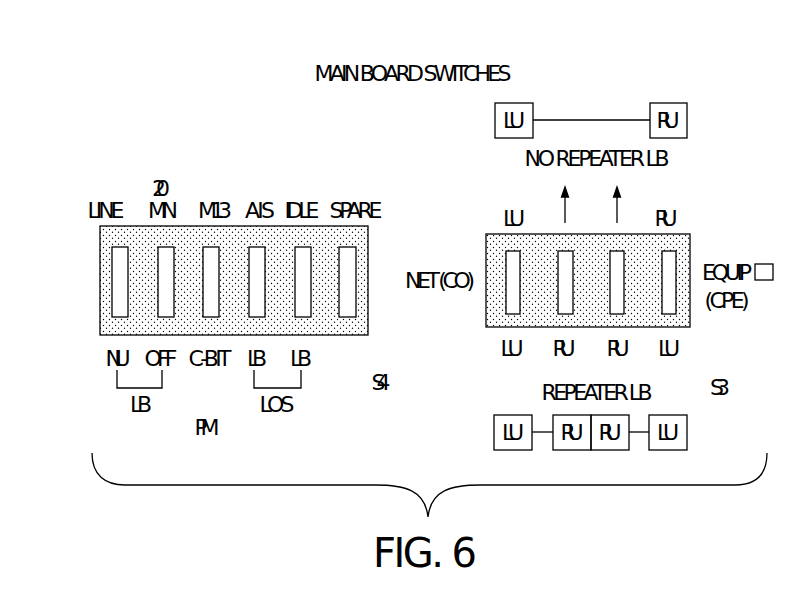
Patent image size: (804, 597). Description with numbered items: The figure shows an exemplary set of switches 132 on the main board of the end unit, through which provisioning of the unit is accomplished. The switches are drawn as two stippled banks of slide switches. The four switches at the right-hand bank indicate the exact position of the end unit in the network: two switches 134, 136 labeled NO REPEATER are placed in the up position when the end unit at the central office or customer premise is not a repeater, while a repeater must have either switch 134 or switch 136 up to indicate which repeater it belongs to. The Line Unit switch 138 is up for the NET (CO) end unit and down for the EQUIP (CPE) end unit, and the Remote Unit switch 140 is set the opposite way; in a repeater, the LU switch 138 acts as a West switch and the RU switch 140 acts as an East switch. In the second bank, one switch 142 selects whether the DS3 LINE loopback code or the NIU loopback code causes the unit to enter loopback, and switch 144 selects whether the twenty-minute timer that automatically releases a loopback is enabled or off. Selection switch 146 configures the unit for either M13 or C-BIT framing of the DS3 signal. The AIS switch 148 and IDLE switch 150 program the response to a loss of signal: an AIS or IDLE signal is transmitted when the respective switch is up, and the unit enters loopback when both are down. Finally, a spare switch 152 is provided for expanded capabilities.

The set of switches 132 is at (192, 68).
The NO REPEATER switch 134 is at (555, 229).
The NO REPEATER switch 136 is at (622, 229).
The Line Unit (LU) switch 138 is at (504, 324).
The Remote Unit (RU) switch 140 is at (678, 324).
The loopback code selection switch 142 is at (98, 265).
The timer switch 144 is at (146, 226).
The selection switch 146 is at (197, 226).
The AIS switch 148 is at (245, 226).
The IDLE switch 150 is at (282, 226).
The spare switch 152 is at (360, 289).